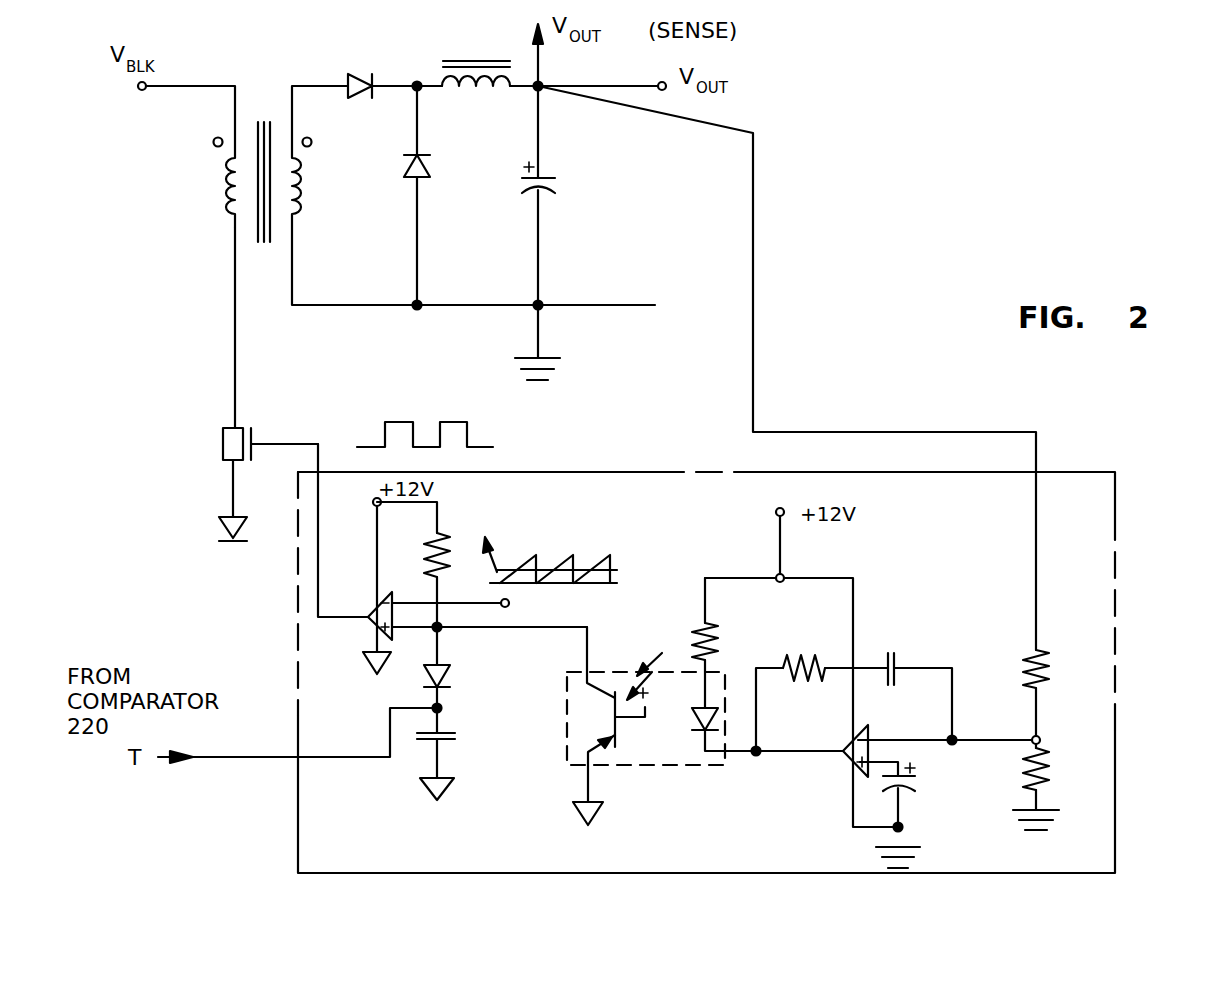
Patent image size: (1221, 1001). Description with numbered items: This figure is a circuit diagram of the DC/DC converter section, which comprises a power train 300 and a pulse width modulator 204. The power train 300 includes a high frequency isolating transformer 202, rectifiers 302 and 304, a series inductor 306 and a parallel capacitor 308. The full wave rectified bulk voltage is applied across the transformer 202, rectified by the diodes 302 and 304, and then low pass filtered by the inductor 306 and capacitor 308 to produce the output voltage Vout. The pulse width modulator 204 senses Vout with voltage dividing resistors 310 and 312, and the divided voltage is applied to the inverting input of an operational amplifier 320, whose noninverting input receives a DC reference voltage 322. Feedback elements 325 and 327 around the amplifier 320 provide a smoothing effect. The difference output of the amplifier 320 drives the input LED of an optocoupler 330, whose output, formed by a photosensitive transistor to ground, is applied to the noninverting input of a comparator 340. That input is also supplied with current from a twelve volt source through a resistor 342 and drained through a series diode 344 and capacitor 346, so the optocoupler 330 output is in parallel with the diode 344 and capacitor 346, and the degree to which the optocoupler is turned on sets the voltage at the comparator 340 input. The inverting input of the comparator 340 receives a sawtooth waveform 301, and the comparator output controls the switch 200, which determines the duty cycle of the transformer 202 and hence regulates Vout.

The switch 200 is at (230, 430).
The high frequency isolating transformer 202 is at (264, 258).
The pulse width modulator 204 is at (1118, 556).
The power train 300 is at (800, 263).
The sawtooth waveform 301 is at (580, 542).
The rectifier 302 is at (363, 72).
The rectifier 304 is at (418, 180).
The series inductor 306 is at (498, 94).
The parallel capacitor 308 is at (546, 178).
The voltage dividing resistor 310 is at (1033, 650).
The voltage dividing resistor 312 is at (1046, 783).
The operational amplifier 320 is at (851, 762).
The DC reference voltage 322 is at (906, 782).
The feedback resistor 325 is at (822, 660).
The feedback resistor 327 is at (886, 656).
The optocoupler 330 is at (681, 668).
The comparator 340 is at (373, 624).
The resistor 342 is at (441, 540).
The series diode 344 is at (445, 674).
The capacitor 346 is at (446, 731).